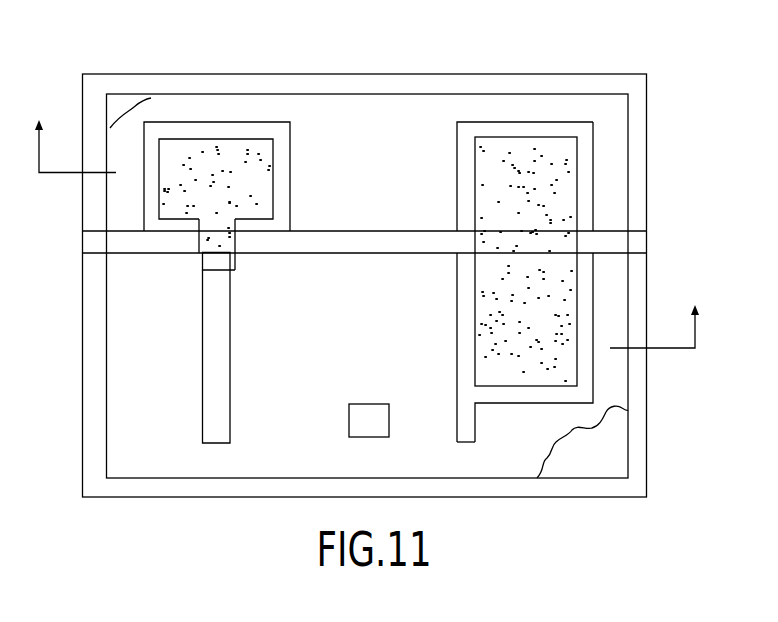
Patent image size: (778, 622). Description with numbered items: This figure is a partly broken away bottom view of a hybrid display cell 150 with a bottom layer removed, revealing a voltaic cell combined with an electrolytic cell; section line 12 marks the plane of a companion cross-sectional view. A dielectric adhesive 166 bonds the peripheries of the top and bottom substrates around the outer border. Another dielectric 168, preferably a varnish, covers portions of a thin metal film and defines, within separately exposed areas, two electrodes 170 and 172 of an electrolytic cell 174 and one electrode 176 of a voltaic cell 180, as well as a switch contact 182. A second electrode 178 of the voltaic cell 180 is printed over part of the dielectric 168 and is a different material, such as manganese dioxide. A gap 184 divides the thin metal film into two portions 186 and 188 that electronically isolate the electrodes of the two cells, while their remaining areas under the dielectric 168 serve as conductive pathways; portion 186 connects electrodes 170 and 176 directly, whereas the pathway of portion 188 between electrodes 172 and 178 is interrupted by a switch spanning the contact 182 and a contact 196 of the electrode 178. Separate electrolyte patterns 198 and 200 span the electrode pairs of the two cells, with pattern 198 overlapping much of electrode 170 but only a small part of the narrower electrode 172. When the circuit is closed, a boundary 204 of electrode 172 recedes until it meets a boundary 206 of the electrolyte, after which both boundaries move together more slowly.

The section line 12 is at (368, 257).
The hybrid display cell 150 is at (282, 50).
The dielectric adhesive 166 is at (641, 118).
The dielectric 168 is at (343, 132).
The electrode 170 is at (283, 176).
The electrode 172 is at (222, 390).
The electrolytic cell 174 is at (204, 348).
The electrode 176 is at (463, 150).
The second electrode 178 is at (467, 357).
The voltaic cell 180 is at (594, 189).
The switch contact 182 is at (367, 427).
The gap 184 is at (412, 248).
The thin-film portion 186 is at (122, 107).
The thin-film portion 188 is at (590, 460).
The contact 196 is at (472, 430).
The electrolyte pattern 198 is at (215, 148).
The electrolyte pattern 200 is at (487, 293).
The boundary of the electrode 204 is at (219, 252).
The boundary of the electrolyte 206 is at (215, 272).